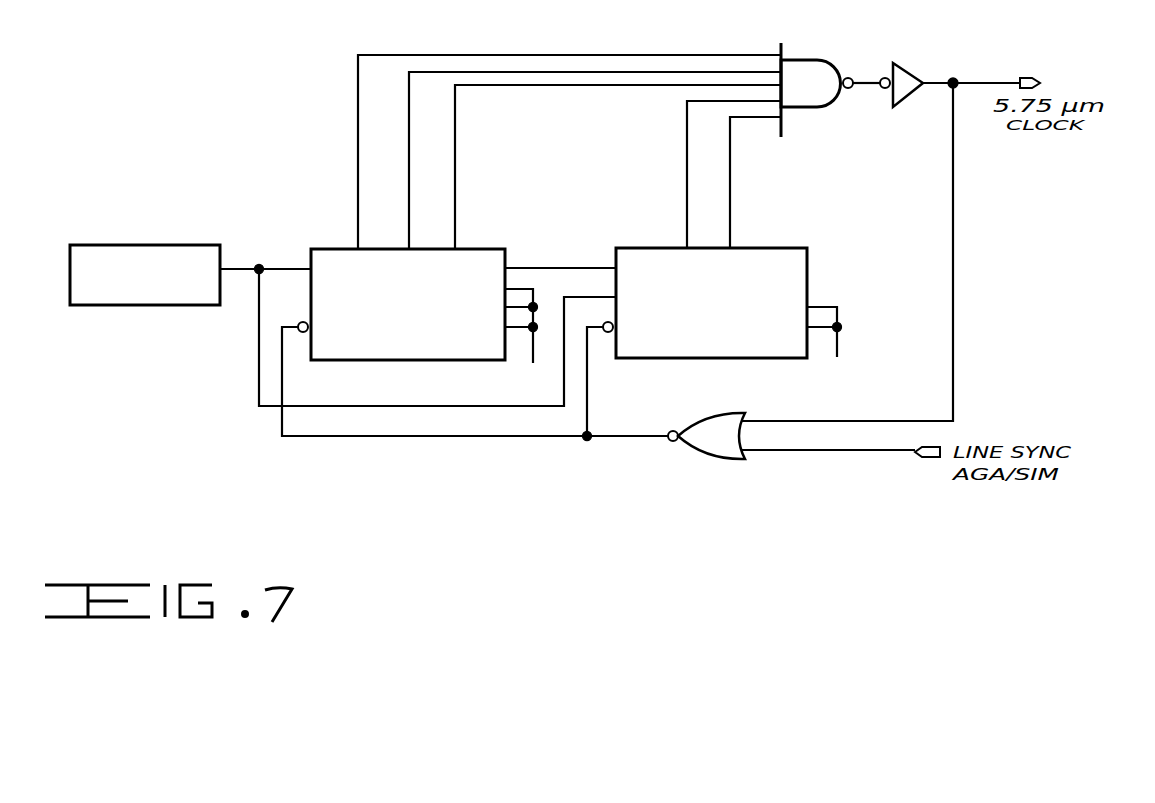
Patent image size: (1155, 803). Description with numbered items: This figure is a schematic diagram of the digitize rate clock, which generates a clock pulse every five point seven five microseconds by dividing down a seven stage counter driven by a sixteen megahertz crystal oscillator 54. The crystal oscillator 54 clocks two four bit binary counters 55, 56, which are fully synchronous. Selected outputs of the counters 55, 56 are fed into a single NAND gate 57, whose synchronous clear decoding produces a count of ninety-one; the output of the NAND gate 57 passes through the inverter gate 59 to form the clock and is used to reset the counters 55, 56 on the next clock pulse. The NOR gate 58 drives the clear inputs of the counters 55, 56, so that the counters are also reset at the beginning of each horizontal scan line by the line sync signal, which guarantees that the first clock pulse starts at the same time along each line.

The crystal oscillator 54 is at (125, 245).
The counter 55 is at (473, 249).
The counter 56 is at (770, 248).
The NAND gate 57 is at (810, 56).
The NOR gate 58 is at (722, 460).
The inverter gate 59 is at (906, 95).